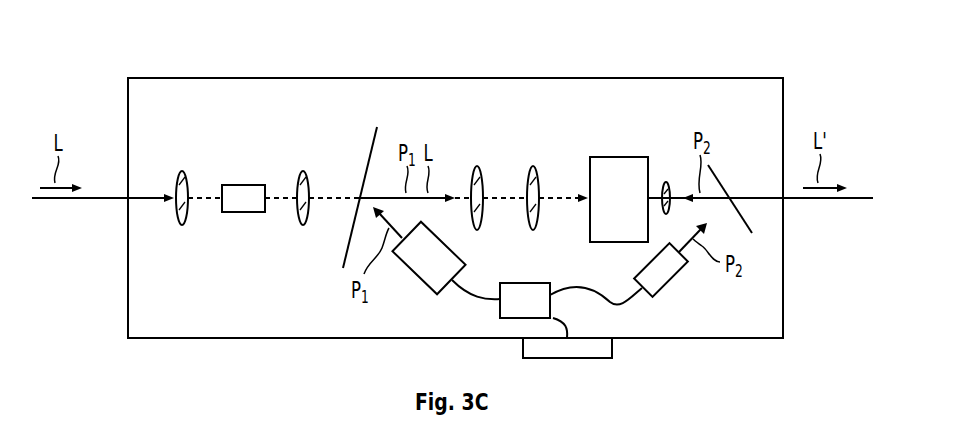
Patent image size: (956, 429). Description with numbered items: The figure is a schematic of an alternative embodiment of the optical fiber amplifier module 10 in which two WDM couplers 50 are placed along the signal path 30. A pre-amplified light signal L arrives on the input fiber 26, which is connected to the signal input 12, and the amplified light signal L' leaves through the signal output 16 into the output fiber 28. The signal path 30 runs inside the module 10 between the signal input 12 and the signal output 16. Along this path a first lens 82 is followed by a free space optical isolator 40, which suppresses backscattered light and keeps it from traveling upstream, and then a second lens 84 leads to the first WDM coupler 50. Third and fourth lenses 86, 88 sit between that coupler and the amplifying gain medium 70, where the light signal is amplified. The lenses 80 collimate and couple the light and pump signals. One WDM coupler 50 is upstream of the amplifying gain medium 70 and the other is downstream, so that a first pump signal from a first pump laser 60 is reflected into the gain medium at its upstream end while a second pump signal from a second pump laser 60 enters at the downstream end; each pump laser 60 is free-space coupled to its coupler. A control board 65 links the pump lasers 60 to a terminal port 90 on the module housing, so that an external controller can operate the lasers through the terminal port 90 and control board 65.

The module 10 is at (255, 50).
The signal input 12 is at (110, 203).
The signal output 16 is at (800, 203).
The input fiber 26 is at (34, 203).
The output fiber 28 is at (866, 203).
The signal path 30 is at (336, 191).
The free space optical isolator 40 is at (239, 185).
The WDM coupler 50 is at (375, 141).
The pump laser 60 is at (420, 291).
The control board 65 is at (500, 301).
The amplifying gain medium 70 is at (636, 157).
The lenses 80 is at (421, 198).
The first lens 82 is at (181, 225).
The second lens 84 is at (302, 225).
The third lens 86 is at (478, 231).
The fourth lens 88 is at (534, 231).
The terminal port 90 is at (565, 358).